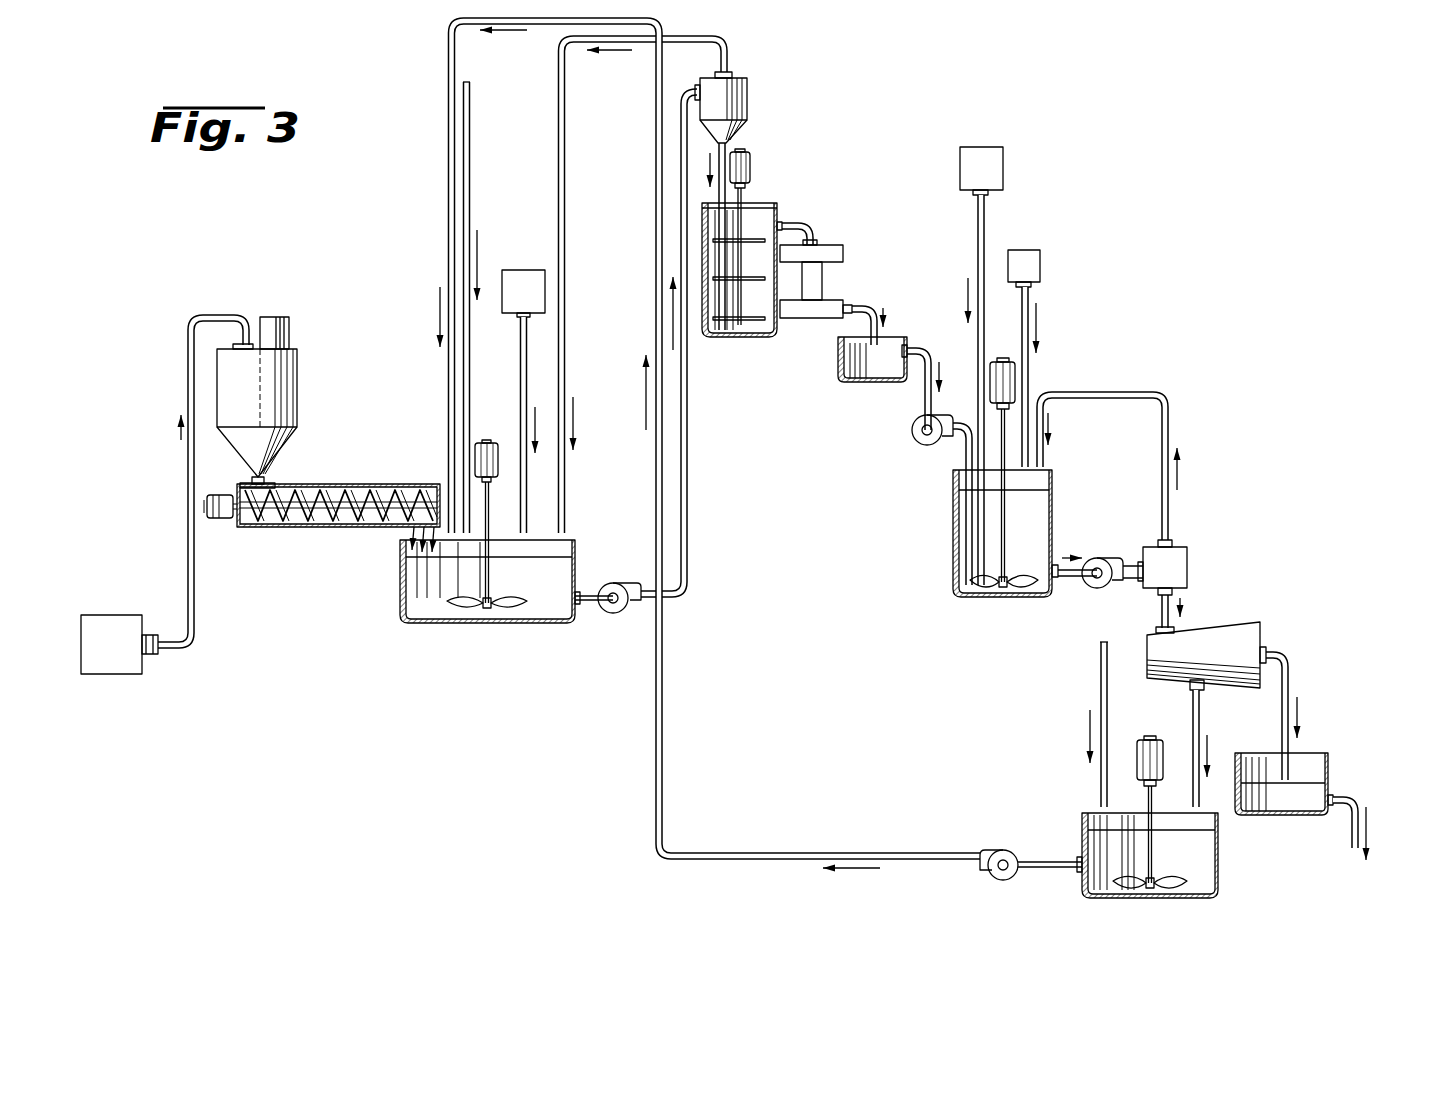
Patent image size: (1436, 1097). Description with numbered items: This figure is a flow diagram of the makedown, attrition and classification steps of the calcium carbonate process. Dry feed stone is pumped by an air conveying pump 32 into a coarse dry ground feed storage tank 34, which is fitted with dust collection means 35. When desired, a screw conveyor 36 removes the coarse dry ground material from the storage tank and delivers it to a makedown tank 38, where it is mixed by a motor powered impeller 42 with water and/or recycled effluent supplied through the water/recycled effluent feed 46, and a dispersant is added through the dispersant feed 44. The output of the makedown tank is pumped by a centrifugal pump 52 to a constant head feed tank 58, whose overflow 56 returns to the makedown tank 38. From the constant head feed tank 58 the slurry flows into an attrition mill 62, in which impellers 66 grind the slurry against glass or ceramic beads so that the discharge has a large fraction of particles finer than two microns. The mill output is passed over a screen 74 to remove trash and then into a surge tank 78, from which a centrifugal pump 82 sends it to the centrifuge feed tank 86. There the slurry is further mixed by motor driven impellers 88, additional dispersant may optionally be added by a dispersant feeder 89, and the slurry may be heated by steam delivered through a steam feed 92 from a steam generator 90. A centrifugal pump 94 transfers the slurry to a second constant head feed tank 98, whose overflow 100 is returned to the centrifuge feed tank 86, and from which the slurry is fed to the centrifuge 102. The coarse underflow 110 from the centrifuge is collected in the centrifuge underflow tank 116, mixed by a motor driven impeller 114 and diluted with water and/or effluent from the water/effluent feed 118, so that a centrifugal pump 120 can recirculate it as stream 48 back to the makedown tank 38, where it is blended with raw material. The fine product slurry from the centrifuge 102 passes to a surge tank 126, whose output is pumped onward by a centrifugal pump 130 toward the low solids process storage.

The air conveying pump 32 is at (115, 617).
The coarse dry ground feed storage tank 34 is at (299, 381).
The dust collection means 35 is at (285, 317).
The screw conveyor 36 is at (278, 529).
The makedown tank 38 is at (397, 583).
The motor powered impeller 42 is at (462, 605).
The dispersant feed 44 is at (540, 275).
The water/recycled effluent feed 46 is at (468, 192).
The stream 48 is at (448, 192).
The centrifugal pump 52 is at (613, 613).
The overflow 56 is at (565, 155).
The constant head feed tank 58 is at (747, 98).
The attrition mill 62 is at (777, 205).
The impellers 66 is at (750, 322).
The screen 74 is at (835, 245).
The surge tank 78 is at (838, 370).
The centrifugal pump 82 is at (918, 445).
The centrifuge feed tank 86 is at (953, 530).
The motor driven impellers 88 is at (980, 600).
The dispersant feeder 89 is at (1040, 262).
The steam generator 90 is at (1000, 150).
The steam feed 92 is at (983, 232).
The centrifugal pump 94 is at (1097, 589).
The constant head feed tank 98 is at (1187, 562).
The overflow 100 is at (1155, 393).
The centrifuge 102 is at (1225, 633).
The underflow 110 is at (1201, 727).
The motor driven impeller 114 is at (1197, 893).
The centrifuge underflow tank 116 is at (1218, 856).
The water/effluent feed 118 is at (1100, 680).
The centrifugal pump 120 is at (985, 852).
The surge tank 126 is at (1328, 771).
The centrifugal pump 130 is at (1356, 856).